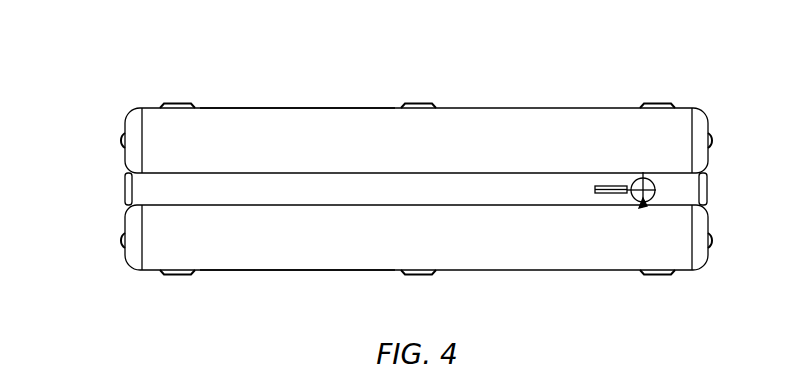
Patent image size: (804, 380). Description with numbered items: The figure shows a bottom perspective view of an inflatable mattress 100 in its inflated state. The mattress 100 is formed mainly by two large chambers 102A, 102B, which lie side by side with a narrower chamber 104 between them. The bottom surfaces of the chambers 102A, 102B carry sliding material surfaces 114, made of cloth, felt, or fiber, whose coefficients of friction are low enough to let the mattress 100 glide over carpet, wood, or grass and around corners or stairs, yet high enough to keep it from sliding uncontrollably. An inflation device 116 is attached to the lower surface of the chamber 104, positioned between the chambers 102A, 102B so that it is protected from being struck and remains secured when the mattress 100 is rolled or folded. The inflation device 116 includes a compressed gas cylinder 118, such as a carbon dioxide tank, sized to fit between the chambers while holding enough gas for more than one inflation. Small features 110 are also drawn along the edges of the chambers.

The mattress 100 is at (389, 162).
The chamber 102A is at (416, 237).
The chamber 102B is at (416, 140).
The chamber 104 is at (140, 198).
The feet / buttons 110 is at (655, 104).
The sliding material surfaces 114 is at (308, 116).
The inflation device 116 is at (645, 207).
The compressed gas cylinder 118 is at (615, 186).